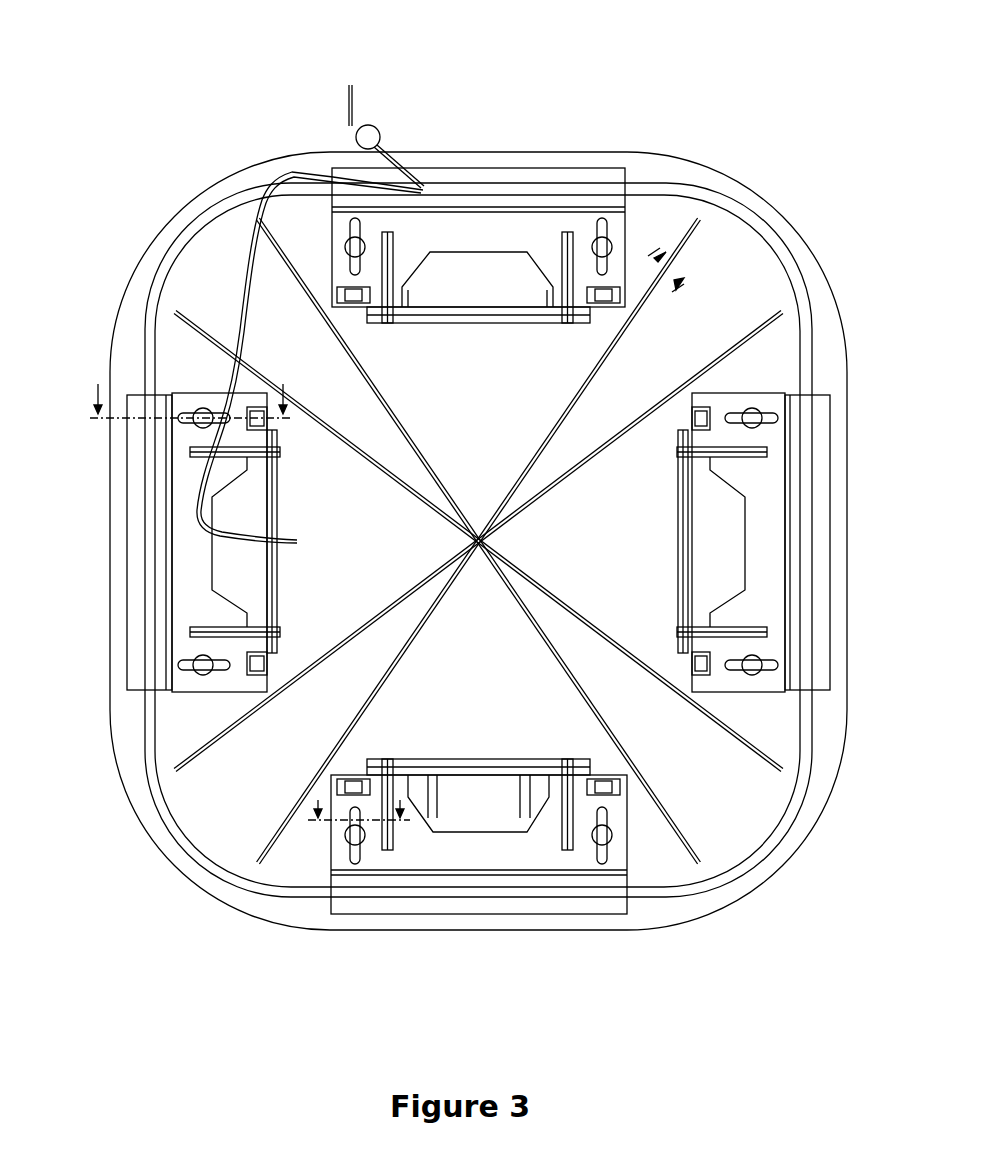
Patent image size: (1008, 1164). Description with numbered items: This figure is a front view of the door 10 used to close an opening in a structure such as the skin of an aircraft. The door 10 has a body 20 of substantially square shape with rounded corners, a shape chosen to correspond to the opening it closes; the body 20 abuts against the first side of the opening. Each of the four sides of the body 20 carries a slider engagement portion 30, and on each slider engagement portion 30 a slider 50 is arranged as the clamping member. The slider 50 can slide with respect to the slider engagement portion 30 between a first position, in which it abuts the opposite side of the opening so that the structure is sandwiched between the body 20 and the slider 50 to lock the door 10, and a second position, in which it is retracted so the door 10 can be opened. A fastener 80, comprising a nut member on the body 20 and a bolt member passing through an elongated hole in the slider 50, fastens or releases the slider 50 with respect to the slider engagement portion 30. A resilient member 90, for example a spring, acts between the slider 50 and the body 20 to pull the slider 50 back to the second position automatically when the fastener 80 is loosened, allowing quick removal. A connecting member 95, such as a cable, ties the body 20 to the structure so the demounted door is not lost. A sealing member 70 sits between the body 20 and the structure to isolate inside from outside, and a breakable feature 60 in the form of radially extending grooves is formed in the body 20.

The door 10 is at (461, 505).
The body 20 is at (750, 277).
The slider engagement portion 30 is at (483, 795).
The slider 50 is at (455, 851).
The breakable feature 60 is at (526, 577).
The sealing member 70 is at (713, 893).
The fastener 80 is at (347, 837).
The resilient member 90 is at (607, 798).
The connecting member 95 is at (243, 277).